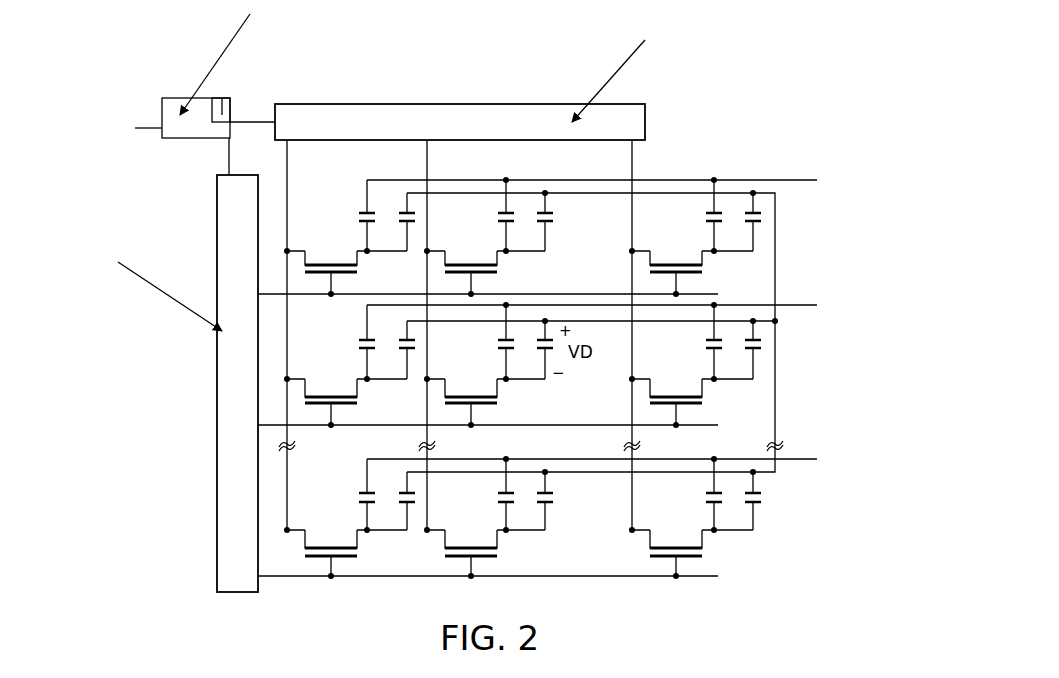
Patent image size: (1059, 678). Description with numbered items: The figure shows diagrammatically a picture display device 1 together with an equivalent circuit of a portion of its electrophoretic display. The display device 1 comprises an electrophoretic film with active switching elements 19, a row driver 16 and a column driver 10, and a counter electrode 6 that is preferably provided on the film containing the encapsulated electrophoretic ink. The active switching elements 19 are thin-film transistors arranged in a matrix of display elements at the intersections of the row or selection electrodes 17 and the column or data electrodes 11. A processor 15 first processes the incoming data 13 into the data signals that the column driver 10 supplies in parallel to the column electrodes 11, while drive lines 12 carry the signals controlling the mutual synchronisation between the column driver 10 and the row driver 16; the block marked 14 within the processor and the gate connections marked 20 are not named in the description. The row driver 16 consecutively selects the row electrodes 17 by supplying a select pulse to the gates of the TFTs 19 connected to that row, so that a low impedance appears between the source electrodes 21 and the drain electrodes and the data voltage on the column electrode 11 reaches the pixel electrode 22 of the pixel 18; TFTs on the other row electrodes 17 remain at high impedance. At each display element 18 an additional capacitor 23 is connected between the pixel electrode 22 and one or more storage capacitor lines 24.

The picture display device 1 is at (219, 615).
The counter electrode 6 is at (778, 250).
The column driver 10 is at (543, 112).
The column electrode 11 is at (289, 158).
The drive line 12 is at (249, 118).
The incoming data 13 is at (147, 104).
The memory 14 is at (222, 98).
The processor 15 is at (184, 98).
The row driver 16 is at (228, 393).
The row electrode 17 is at (275, 290).
The pixel 18 is at (412, 216).
The thin-film transistor 19 is at (360, 270).
The gate connection 20 is at (349, 300).
The source electrode 21 is at (300, 247).
The pixel electrode 22 is at (364, 250).
The additional capacitor 23 is at (364, 219).
The storage capacitor line 24 is at (797, 178).